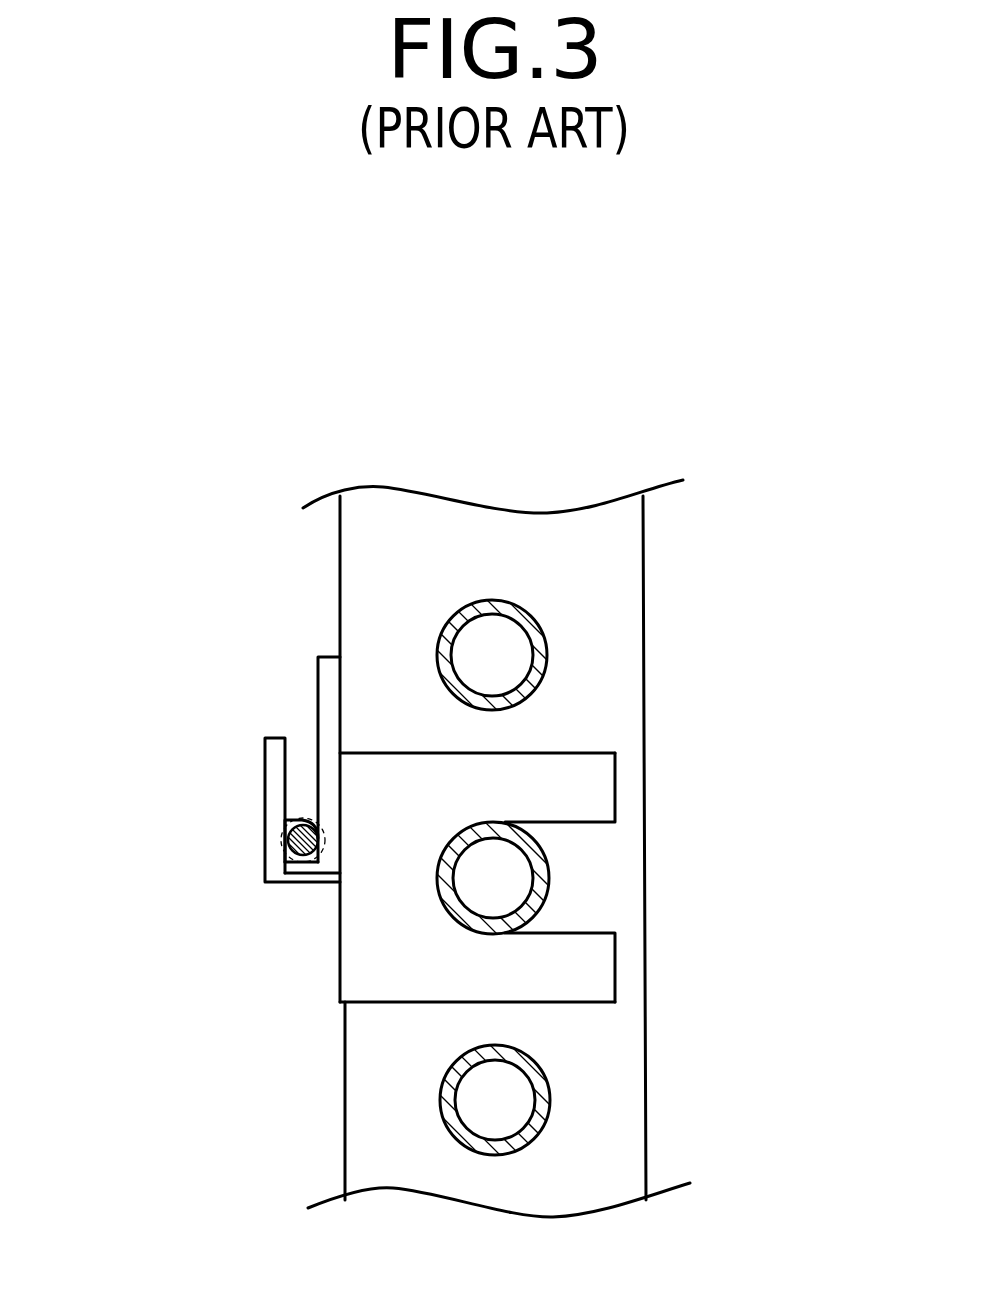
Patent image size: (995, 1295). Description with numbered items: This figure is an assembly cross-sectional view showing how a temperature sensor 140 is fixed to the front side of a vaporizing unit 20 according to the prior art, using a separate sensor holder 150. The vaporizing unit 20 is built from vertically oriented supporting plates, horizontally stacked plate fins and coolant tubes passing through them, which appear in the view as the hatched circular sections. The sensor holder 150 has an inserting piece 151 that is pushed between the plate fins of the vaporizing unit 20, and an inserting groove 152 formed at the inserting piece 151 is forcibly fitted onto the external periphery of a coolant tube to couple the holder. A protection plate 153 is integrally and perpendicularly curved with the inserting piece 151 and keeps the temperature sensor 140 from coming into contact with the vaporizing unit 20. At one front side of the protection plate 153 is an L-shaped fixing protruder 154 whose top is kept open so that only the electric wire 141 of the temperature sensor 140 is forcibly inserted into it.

The vaporizing unit 20 is at (572, 512).
The sensor holder 150 is at (352, 950).
The inserting piece 151 is at (590, 792).
The inserting groove 152 is at (587, 932).
The protection plate 153 is at (327, 675).
The fixing protruder 154 is at (272, 767).
The temperature sensor 140 is at (290, 810).
The electric wire 141 is at (283, 842).